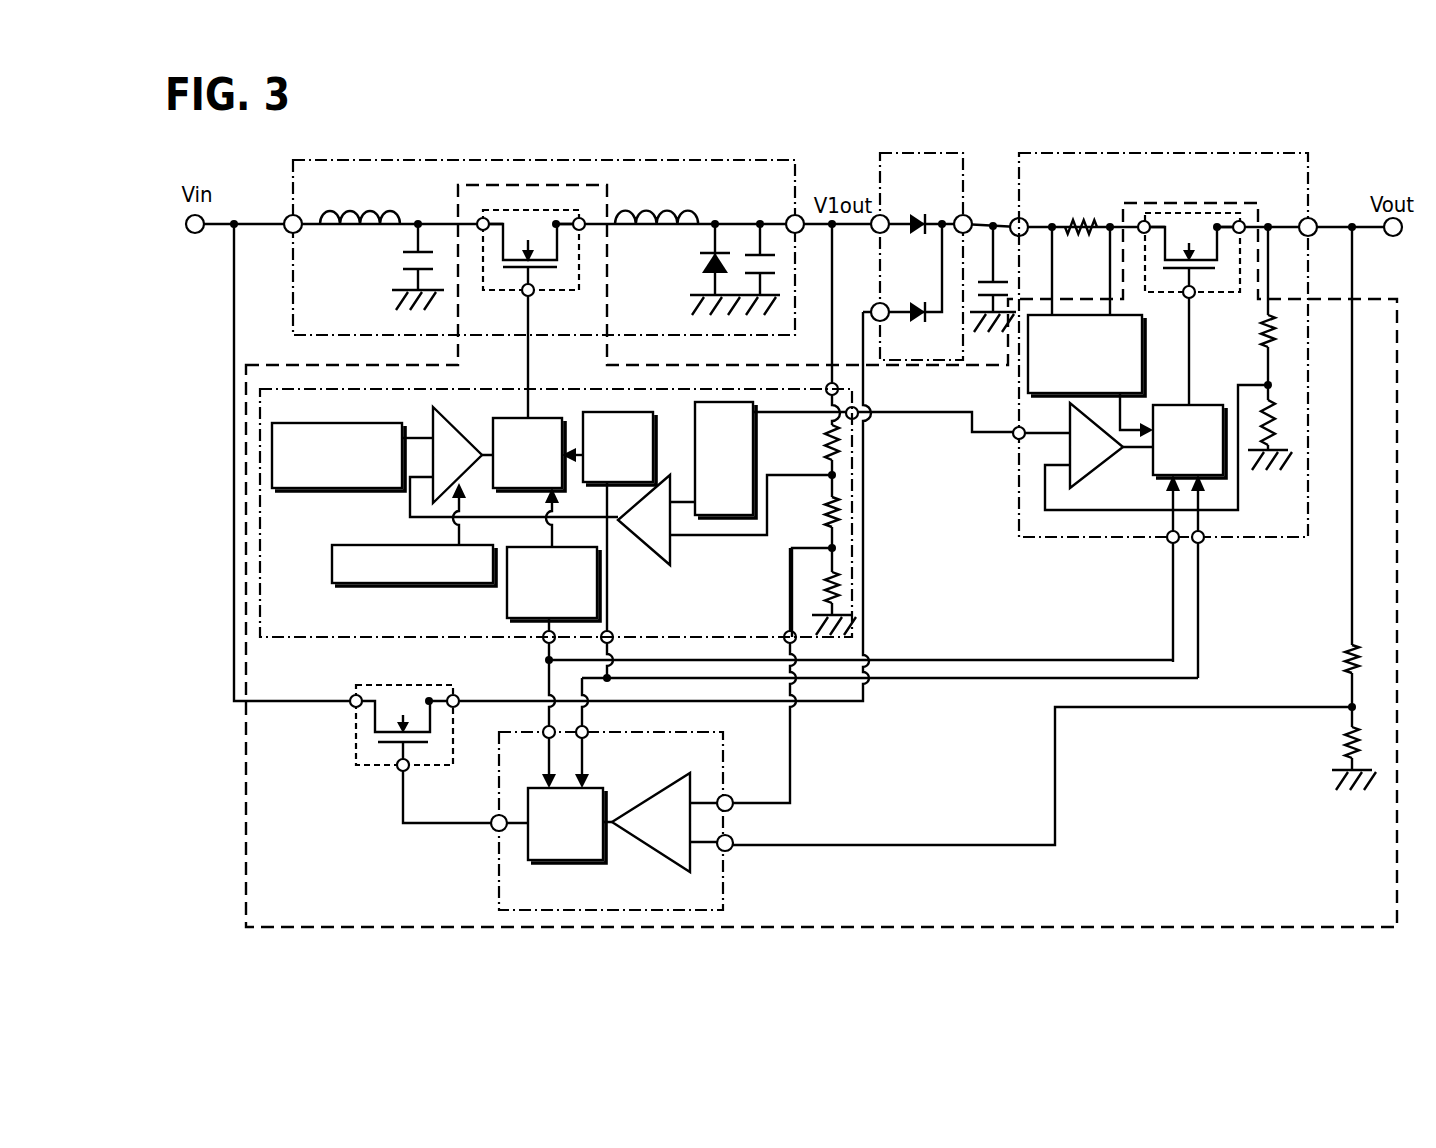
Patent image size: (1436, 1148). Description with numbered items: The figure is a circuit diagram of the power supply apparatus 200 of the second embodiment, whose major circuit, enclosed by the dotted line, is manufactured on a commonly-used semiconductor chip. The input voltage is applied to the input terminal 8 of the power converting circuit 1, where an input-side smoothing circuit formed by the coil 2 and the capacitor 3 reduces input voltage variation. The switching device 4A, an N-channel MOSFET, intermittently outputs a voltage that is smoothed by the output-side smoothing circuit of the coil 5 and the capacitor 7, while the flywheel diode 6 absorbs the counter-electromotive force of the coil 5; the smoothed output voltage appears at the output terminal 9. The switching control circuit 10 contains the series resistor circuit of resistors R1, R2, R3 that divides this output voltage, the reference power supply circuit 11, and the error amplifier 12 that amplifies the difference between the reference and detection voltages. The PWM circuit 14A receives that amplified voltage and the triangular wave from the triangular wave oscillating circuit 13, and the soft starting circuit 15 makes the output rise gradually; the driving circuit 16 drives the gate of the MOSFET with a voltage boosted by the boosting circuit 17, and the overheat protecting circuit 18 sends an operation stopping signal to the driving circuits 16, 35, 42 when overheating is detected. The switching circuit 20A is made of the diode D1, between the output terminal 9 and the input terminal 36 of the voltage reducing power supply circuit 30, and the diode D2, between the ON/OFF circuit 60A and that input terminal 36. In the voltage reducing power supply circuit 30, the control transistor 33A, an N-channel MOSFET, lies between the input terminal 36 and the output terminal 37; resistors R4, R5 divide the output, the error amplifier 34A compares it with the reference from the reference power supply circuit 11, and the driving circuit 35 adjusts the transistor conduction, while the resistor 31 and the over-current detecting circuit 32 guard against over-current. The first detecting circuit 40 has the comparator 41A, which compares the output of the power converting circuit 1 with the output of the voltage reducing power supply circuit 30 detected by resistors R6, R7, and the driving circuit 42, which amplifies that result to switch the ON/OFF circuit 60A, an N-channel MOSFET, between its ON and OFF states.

The power supply apparatus 200 is at (432, 136).
The power converting circuit 1 is at (668, 160).
The coil 2 is at (333, 232).
The capacitor 3 is at (410, 258).
The switching device 4A is at (560, 296).
The coil 5 is at (636, 228).
The flywheel diode 6 is at (702, 270).
The capacitor 7 is at (752, 244).
The input terminal 8 is at (288, 216).
The output terminal 9 is at (803, 213).
The switching control circuit 10 is at (480, 387).
The reference power supply circuit 11 is at (695, 452).
The error amplifier 12 is at (670, 555).
The triangular wave oscillating circuit 13 is at (330, 490).
The PWM circuit 14A is at (435, 430).
The soft starting circuit 15 is at (332, 567).
The driving circuit 16 is at (493, 424).
The boosting circuit 17 is at (599, 411).
The overheat protecting circuit 18 is at (507, 607).
The switching circuit 20A is at (920, 153).
The diode D1 is at (918, 236).
The diode D2 is at (920, 326).
The voltage reducing power supply circuit 30 is at (1248, 153).
The resistor 31 is at (1082, 236).
The over-current detecting circuit 32 is at (1142, 325).
The control transistor 33A is at (1232, 207).
The error amplifier 34A is at (1095, 470).
The driving circuit 35 is at (1205, 405).
The input terminal 36 is at (1019, 217).
The output terminal 37 is at (1316, 221).
The first detecting circuit 40 is at (499, 887).
The comparator 41A is at (645, 802).
The driving circuit 42 is at (527, 797).
The ON/OFF circuit 60A is at (357, 768).
The resistor R1 is at (828, 452).
The resistor R2 is at (828, 524).
The resistor R3 is at (828, 579).
The resistor R4 is at (1262, 332).
The resistor R5 is at (1275, 415).
The resistor R6 is at (1347, 652).
The resistor R7 is at (1347, 754).